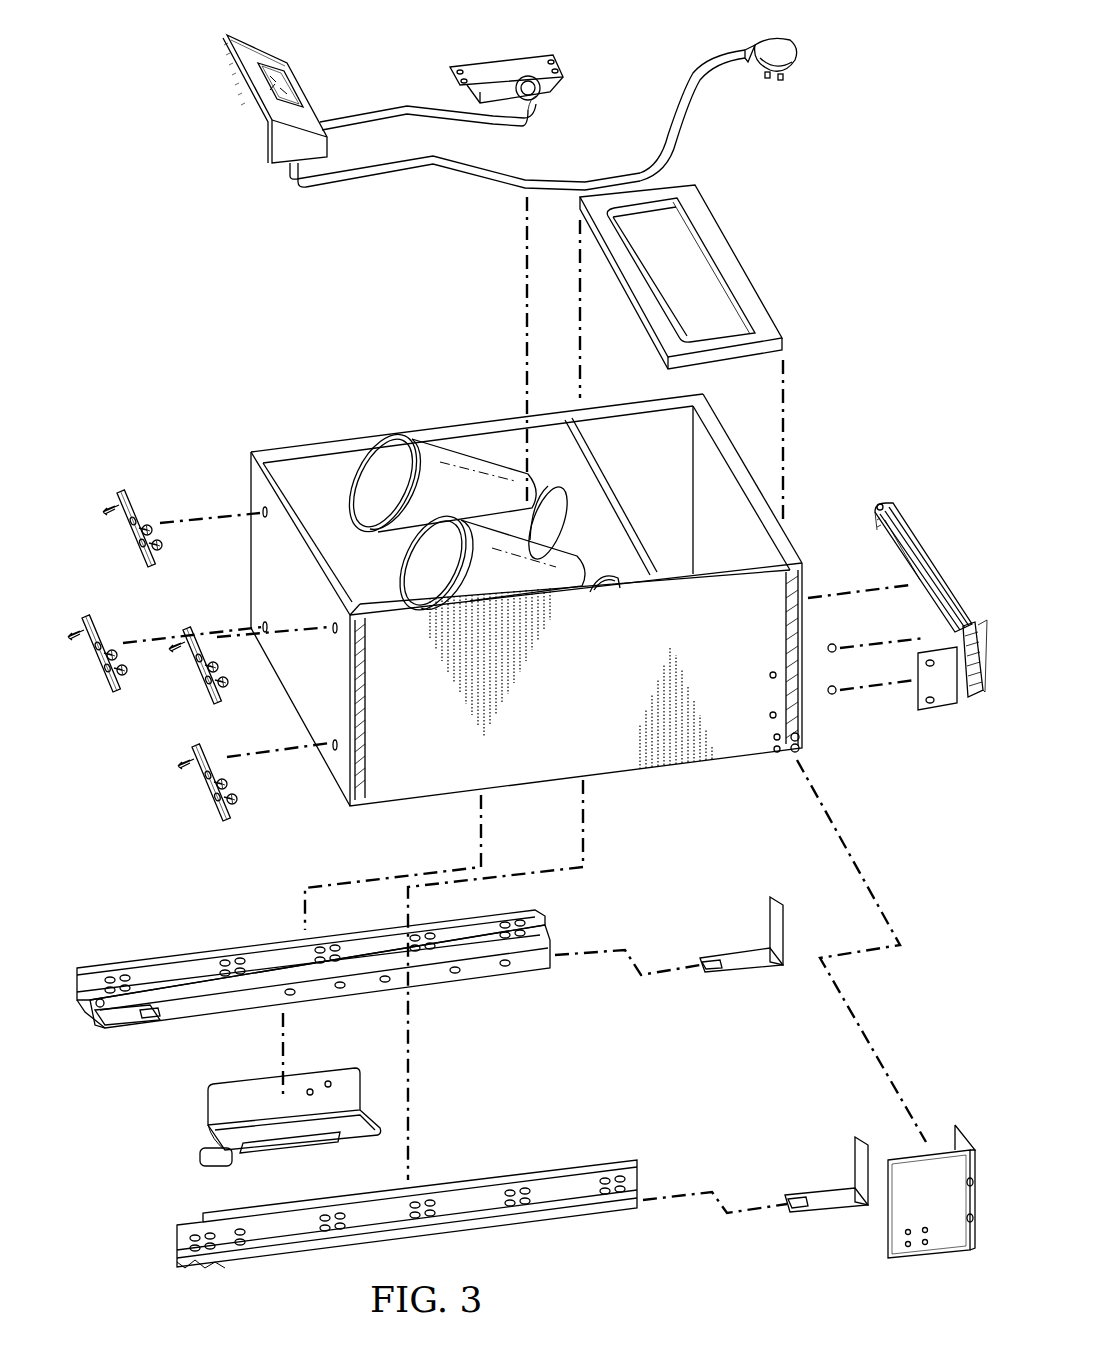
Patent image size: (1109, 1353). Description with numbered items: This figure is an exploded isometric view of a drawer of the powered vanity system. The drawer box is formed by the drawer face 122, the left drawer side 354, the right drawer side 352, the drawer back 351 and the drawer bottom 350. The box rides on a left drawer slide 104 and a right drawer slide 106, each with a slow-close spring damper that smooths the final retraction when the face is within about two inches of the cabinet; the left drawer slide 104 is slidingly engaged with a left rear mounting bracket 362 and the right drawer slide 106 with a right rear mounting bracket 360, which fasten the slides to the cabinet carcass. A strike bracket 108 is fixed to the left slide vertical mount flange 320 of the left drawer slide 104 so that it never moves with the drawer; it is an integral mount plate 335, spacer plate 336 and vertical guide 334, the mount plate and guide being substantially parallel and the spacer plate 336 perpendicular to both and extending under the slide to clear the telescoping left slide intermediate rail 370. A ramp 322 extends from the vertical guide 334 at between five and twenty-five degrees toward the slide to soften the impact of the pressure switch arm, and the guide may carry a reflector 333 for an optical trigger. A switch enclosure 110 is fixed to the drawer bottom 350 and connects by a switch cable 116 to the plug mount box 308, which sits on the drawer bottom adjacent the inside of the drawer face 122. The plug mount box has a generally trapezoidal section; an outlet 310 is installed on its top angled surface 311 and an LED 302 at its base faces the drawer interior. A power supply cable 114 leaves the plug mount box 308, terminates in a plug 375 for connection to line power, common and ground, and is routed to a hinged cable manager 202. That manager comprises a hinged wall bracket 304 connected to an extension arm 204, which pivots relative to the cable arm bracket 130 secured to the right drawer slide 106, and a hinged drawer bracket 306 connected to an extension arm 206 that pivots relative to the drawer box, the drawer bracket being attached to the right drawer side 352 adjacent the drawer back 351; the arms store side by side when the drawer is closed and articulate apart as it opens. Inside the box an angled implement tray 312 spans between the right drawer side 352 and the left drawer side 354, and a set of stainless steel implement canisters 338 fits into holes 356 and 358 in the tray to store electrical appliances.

The left drawer slide 104 is at (348, 952).
The right drawer slide 106 is at (160, 1247).
The strike bracket 108 is at (297, 1108).
The switch enclosure 110 is at (562, 62).
The power supply cable 114 is at (690, 115).
The switch cable 116 is at (522, 128).
The drawer face 122 is at (300, 708).
The cable arm bracket 130 is at (930, 1258).
The hinged cable manager 202 is at (882, 504).
The extension arm 204 is at (912, 530).
The extension arm 206 is at (890, 560).
The LED 302 is at (335, 155).
The hinged wall bracket 304 is at (975, 620).
The hinged drawer bracket 306 is at (940, 715).
The plug mount box 308 is at (256, 82).
The outlet 310 is at (300, 72).
The top angled surface 311 is at (258, 46).
The angled implement tray 312 is at (598, 460).
The left slide vertical mount flange 320 is at (130, 965).
The ramp 322 is at (198, 1158).
The reflector 333 is at (300, 1150).
The vertical guide 334 is at (365, 1140).
The mount plate 335 is at (206, 1108).
The spacer plate 336 is at (228, 1138).
The implement canisters 338 is at (486, 508).
The drawer bottom 350 is at (380, 602).
The drawer back 351 is at (712, 435).
The right drawer side 352 is at (748, 628).
The left drawer side 354 is at (322, 462).
The hole 356 is at (604, 594).
The hole 358 is at (560, 492).
The right rear mounting bracket 360 is at (830, 1212).
The left rear mounting bracket 362 is at (748, 970).
The left slide intermediate rail 370 is at (520, 965).
The plug 375 is at (788, 38).